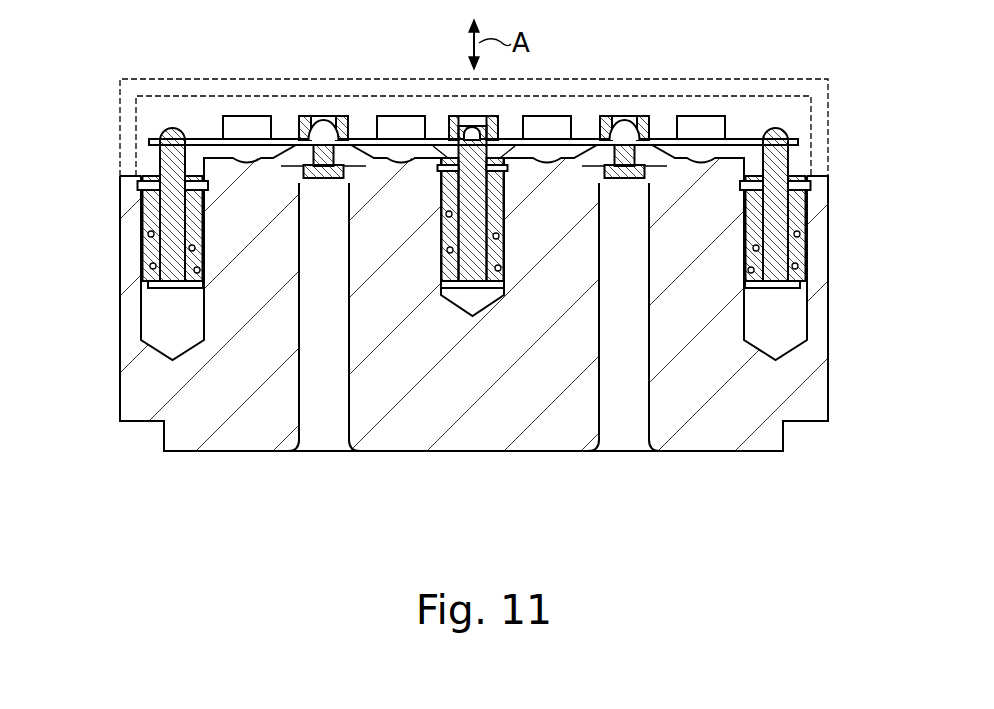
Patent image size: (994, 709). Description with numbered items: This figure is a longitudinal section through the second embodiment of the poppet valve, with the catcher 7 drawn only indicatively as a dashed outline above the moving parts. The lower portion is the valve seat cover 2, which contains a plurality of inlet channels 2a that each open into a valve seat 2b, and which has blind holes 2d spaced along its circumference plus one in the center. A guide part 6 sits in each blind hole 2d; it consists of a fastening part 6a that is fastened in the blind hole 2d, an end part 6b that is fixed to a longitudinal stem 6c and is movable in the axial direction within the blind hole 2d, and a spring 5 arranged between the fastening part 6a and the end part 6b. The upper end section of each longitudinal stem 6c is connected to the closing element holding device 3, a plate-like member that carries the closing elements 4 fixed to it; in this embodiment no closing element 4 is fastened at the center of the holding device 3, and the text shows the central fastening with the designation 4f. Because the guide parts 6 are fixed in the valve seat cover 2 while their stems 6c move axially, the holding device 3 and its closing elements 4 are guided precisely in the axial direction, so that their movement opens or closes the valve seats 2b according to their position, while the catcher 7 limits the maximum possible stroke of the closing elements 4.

The valve seat cover 2 is at (812, 330).
The inlet channel 2a is at (317, 432).
The valve seat 2b is at (353, 178).
The blind hole 2d is at (163, 310).
The closing element holding device 3 is at (198, 142).
The closing element 4 is at (247, 128).
The fixing screw 4f is at (624, 128).
The spring 5 is at (150, 232).
The guide part 6 is at (58, 160).
The fastening part 6a is at (147, 203).
The end part 6b is at (152, 272).
The longitudinal stem 6c is at (170, 140).
The catcher 7 is at (748, 85).